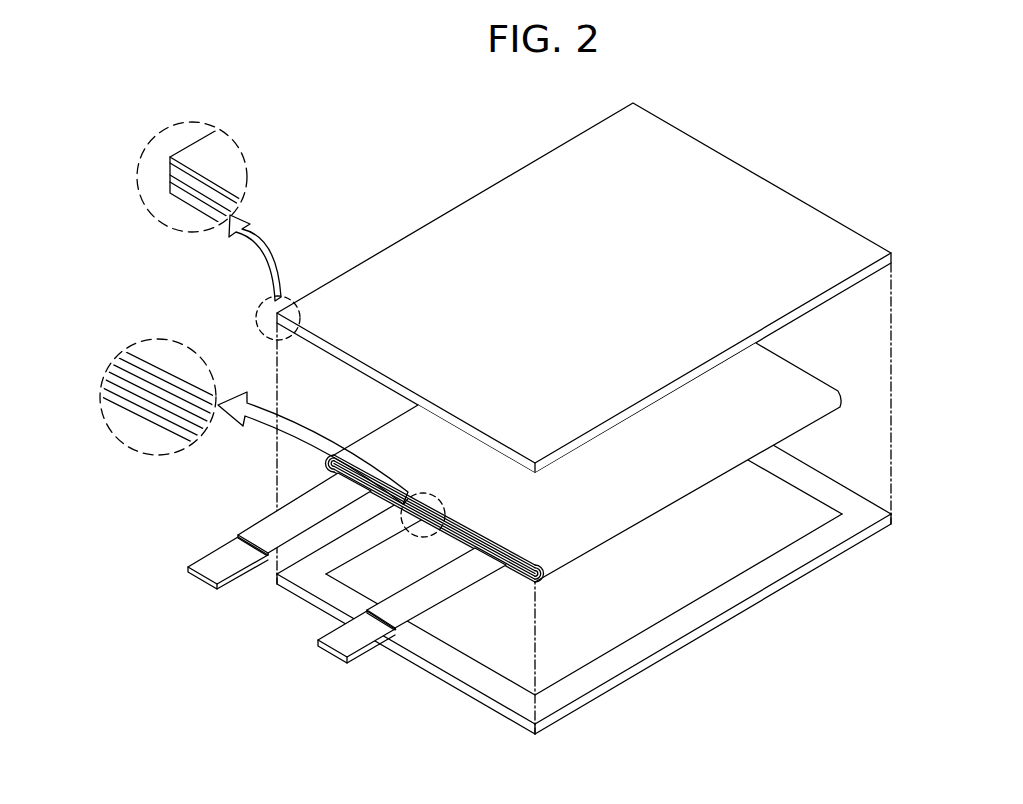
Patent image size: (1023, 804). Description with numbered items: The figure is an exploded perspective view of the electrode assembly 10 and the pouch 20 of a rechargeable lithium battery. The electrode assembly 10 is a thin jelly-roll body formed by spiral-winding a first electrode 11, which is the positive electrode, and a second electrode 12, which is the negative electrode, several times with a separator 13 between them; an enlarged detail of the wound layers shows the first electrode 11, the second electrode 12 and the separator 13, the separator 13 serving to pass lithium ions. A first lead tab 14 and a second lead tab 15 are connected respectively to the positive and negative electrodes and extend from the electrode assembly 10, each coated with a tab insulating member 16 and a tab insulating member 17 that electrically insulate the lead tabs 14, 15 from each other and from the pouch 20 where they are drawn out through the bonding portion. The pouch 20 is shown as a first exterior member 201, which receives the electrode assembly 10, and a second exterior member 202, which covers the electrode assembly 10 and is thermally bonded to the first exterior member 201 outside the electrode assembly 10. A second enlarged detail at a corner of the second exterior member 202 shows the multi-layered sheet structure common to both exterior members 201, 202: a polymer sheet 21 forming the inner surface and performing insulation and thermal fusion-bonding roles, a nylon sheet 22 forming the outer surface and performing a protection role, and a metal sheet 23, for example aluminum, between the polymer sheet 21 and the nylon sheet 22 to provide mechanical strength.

The electrode assembly 10 is at (682, 510).
The first electrode 11 is at (136, 398).
The second electrode 12 is at (160, 382).
The separator 13 is at (178, 408).
The first lead tab 14 is at (233, 563).
The second lead tab 15 is at (360, 637).
The tab insulating member 16 is at (300, 513).
The tab insulating member 17 is at (435, 600).
The pouch 20 is at (644, 418).
The polymer sheet 21 is at (186, 197).
The nylon sheet 22 is at (168, 160).
The metal sheet 23 is at (168, 176).
The first exterior member 201 is at (845, 498).
The second exterior member 202 is at (972, 435).